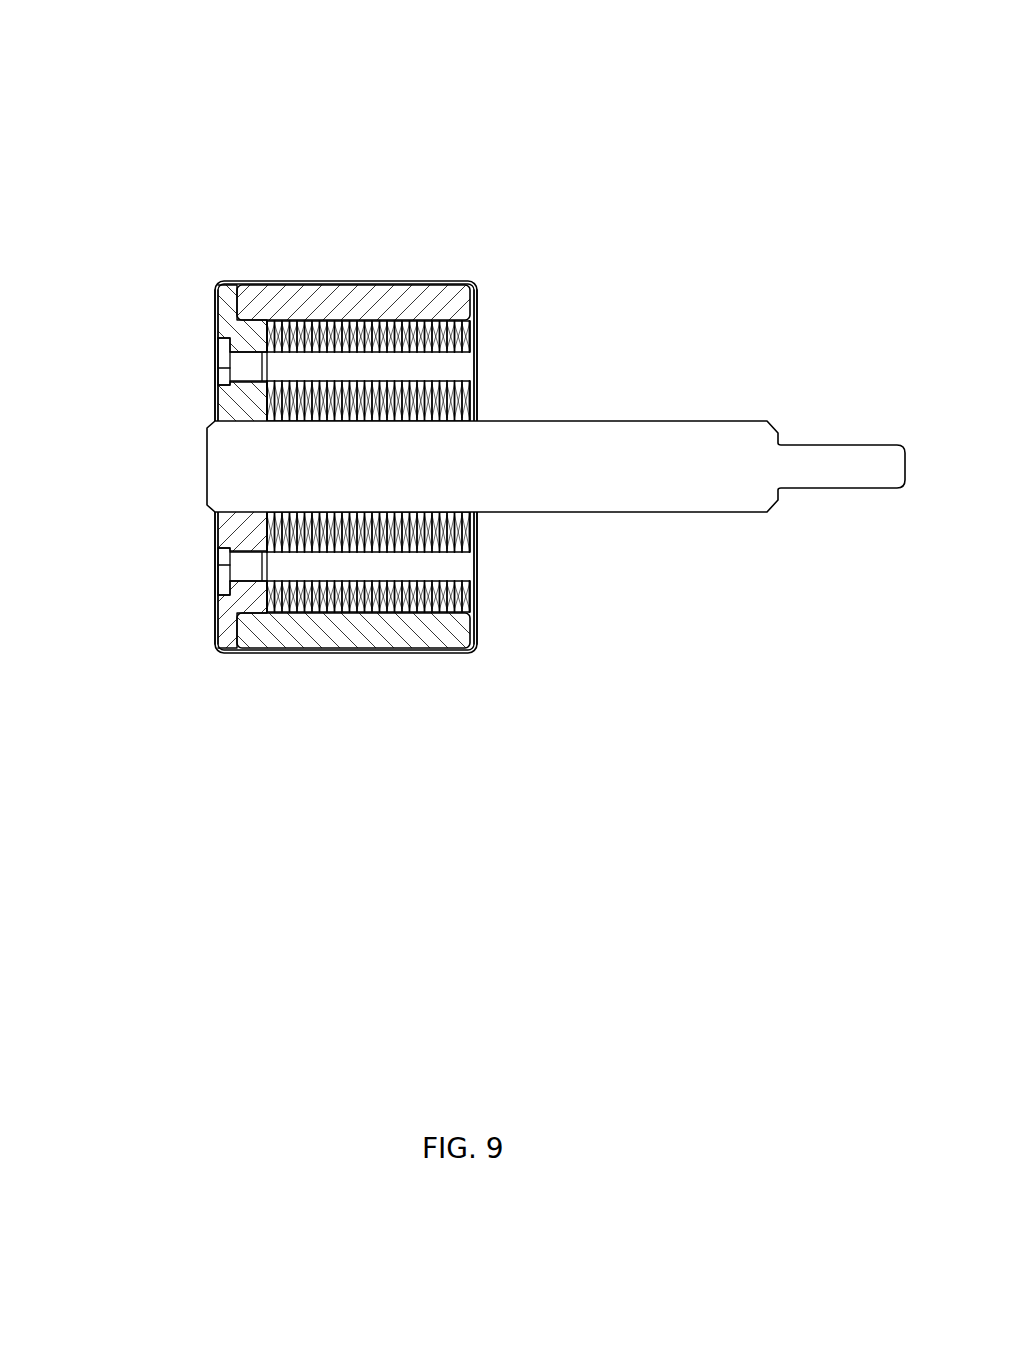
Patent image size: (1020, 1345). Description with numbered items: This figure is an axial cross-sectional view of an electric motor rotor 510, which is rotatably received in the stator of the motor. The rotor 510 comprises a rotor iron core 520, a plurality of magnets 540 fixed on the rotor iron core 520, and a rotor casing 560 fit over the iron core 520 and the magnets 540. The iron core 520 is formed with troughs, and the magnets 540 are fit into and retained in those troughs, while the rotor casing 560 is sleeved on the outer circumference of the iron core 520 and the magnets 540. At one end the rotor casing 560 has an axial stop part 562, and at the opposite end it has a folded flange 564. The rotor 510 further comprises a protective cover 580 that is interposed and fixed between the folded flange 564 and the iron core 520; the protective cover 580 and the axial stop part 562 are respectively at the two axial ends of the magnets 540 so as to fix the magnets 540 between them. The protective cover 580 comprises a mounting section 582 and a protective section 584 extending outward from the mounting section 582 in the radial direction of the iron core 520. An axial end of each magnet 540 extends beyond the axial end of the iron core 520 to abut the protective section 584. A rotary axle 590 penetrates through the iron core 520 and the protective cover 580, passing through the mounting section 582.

The rotor 510 is at (498, 56).
The rotor iron core 520 is at (427, 327).
The magnets 540 is at (348, 305).
The rotor casing 560 is at (275, 281).
The axial stop part 562 is at (473, 337).
The folded flange 564 is at (217, 303).
The protective cover 580 is at (105, 590).
The mounting section 582 is at (250, 597).
The protective section 584 is at (232, 628).
The rotary axle 590 is at (603, 463).